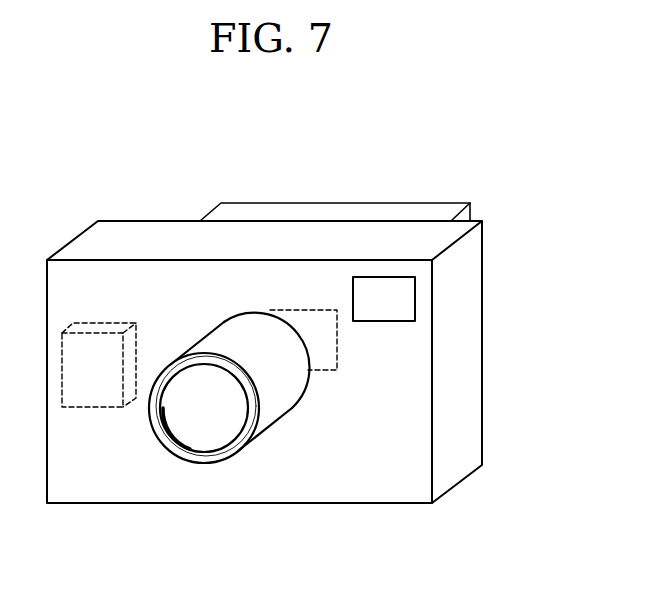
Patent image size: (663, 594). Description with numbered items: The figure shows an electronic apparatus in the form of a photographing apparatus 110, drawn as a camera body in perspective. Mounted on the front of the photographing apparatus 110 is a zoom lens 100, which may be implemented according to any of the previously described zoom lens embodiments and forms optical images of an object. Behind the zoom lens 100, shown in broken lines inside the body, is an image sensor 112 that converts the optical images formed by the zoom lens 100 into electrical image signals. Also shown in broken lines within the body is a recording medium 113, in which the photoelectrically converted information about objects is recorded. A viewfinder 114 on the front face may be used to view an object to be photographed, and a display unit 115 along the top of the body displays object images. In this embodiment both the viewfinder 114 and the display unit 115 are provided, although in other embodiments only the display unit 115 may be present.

The zoom lens 100 is at (193, 442).
The photographing apparatus 110 is at (398, 493).
The image sensor 112 is at (320, 367).
The recording medium 113 is at (92, 393).
The viewfinder 114 is at (410, 300).
The display unit 115 is at (337, 210).